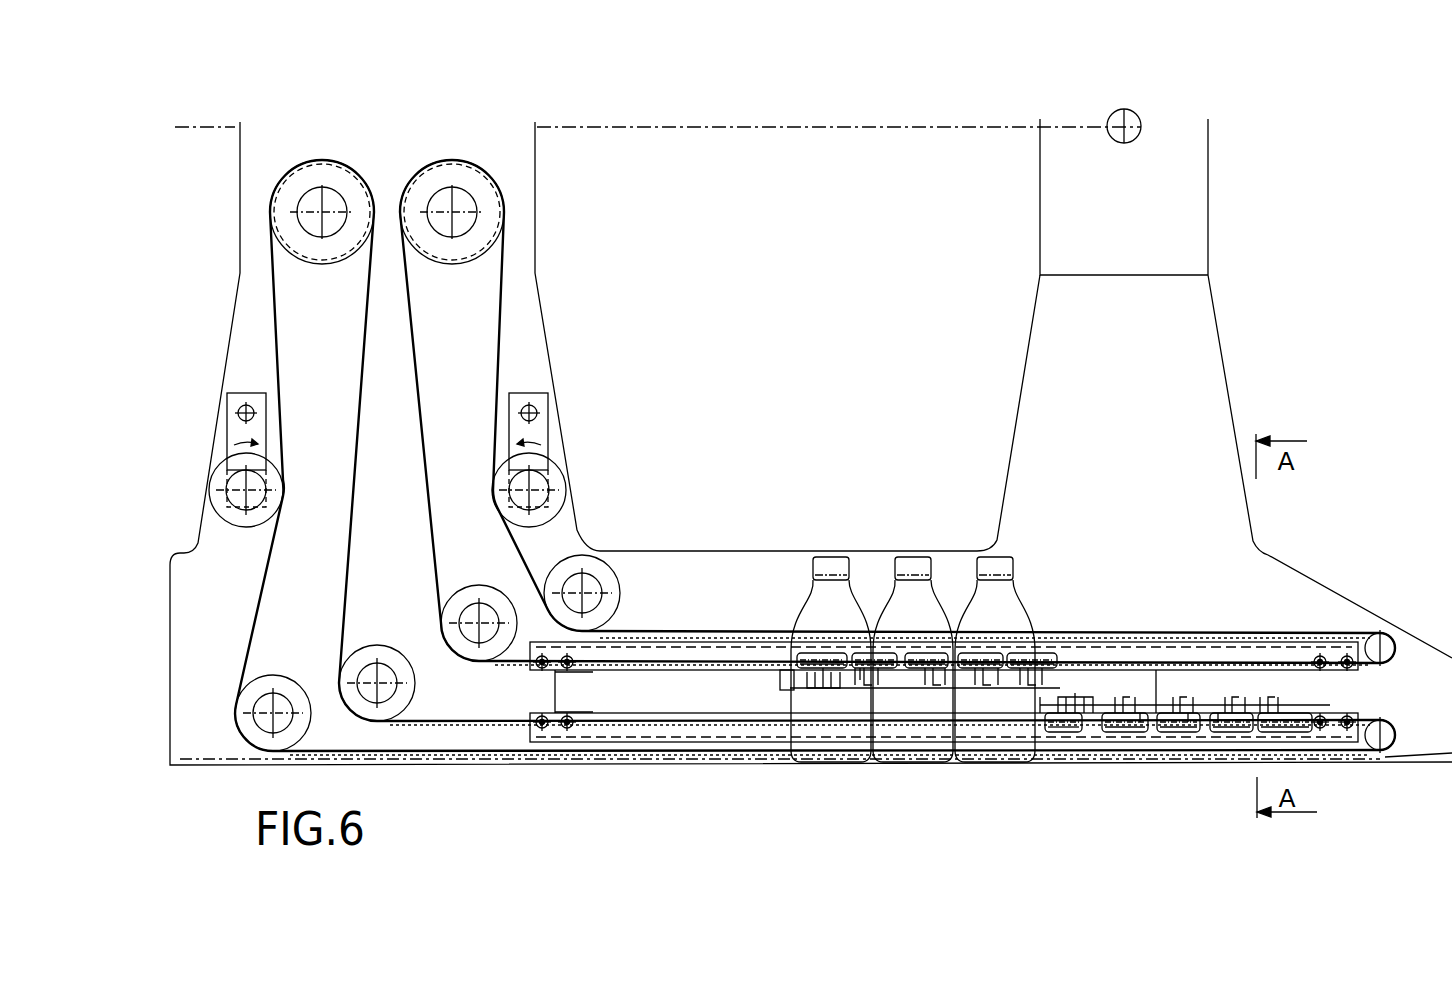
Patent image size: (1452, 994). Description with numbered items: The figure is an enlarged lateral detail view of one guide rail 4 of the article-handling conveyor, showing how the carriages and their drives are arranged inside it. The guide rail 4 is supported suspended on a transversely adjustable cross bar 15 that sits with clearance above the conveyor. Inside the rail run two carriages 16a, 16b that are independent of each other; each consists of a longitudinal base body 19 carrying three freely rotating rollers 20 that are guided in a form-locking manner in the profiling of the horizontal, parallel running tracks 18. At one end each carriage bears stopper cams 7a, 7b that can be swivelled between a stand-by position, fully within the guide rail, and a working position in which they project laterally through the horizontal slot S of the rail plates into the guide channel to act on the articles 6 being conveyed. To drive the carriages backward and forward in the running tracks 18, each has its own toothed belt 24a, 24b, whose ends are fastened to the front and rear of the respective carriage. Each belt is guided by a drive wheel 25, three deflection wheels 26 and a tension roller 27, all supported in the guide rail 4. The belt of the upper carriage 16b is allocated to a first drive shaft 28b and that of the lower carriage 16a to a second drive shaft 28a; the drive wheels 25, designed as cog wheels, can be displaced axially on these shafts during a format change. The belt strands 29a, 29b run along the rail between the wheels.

The guide rail 4 is at (1030, 438).
The containers 6 is at (987, 570).
The stopper cam 7a is at (1048, 703).
The stopper cam 7b is at (782, 672).
The cross bar 15 is at (1115, 135).
The carriage 16a is at (1112, 728).
The carriage 16b is at (906, 690).
The running track 18 is at (600, 730).
The base body 19 is at (1252, 705).
The roller 20 is at (1218, 724).
The toothed belt 24a is at (472, 752).
The toothed belt 24b is at (1165, 660).
The drive wheel 25 is at (282, 212).
The deflection wheel 26 is at (347, 677).
The tension roller 27 is at (222, 488).
The drive shaft 28a is at (315, 220).
The drive shaft 28b is at (445, 220).
The endless conveyor chain 29a is at (373, 147).
The endless conveyor chain 29b is at (500, 147).
The slot S is at (660, 683).